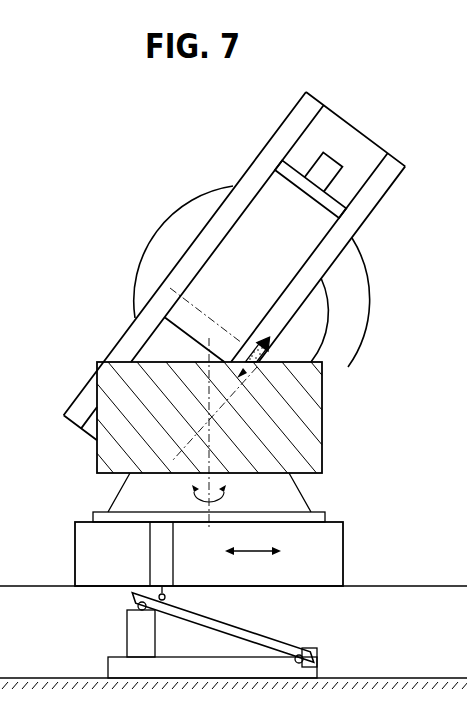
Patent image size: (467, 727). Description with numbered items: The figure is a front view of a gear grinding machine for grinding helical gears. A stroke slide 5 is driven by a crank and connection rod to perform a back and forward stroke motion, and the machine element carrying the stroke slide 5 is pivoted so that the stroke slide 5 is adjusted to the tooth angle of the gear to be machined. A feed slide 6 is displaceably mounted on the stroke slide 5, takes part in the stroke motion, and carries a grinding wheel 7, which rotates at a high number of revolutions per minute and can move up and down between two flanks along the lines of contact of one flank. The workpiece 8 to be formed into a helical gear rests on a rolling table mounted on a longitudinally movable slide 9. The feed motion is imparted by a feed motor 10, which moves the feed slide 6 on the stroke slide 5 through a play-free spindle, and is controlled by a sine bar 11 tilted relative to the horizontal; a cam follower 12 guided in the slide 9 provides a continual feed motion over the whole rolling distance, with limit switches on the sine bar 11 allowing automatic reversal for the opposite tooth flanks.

The stroke slide 5 is at (368, 160).
The feed slide 6 is at (297, 235).
The grinding wheel 7 is at (277, 339).
The workpiece 8 is at (293, 435).
The longitudinally movable slide 9 is at (320, 550).
The feed motor 10 is at (328, 165).
The sine bar 11 is at (267, 640).
The cam follower 12 is at (165, 592).